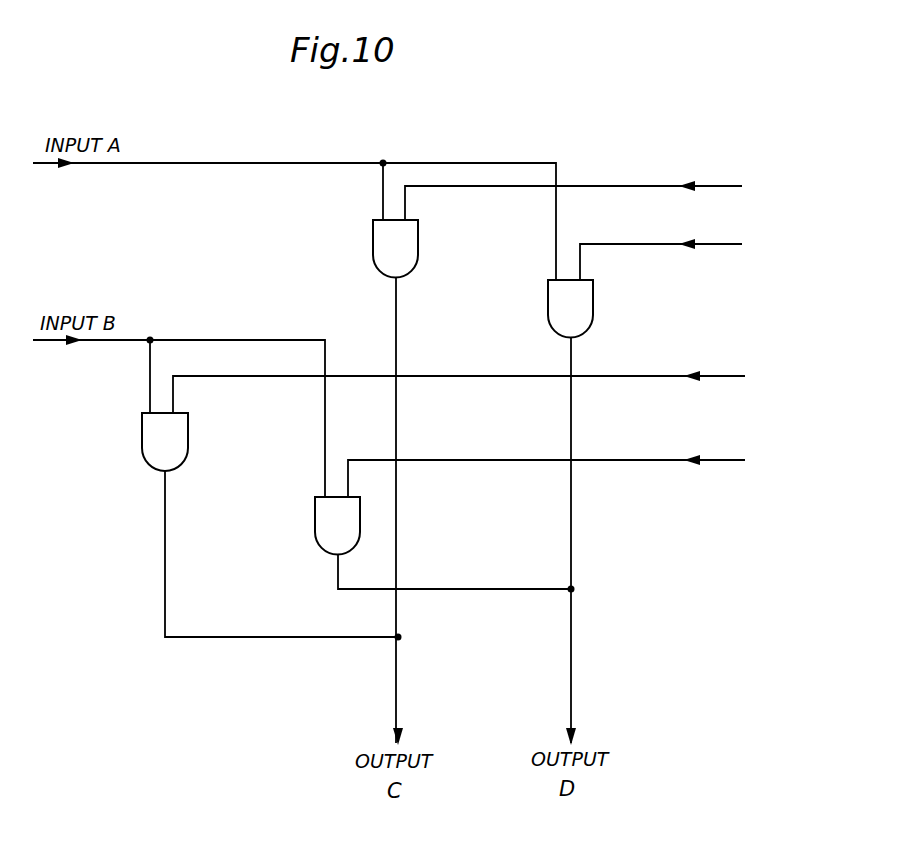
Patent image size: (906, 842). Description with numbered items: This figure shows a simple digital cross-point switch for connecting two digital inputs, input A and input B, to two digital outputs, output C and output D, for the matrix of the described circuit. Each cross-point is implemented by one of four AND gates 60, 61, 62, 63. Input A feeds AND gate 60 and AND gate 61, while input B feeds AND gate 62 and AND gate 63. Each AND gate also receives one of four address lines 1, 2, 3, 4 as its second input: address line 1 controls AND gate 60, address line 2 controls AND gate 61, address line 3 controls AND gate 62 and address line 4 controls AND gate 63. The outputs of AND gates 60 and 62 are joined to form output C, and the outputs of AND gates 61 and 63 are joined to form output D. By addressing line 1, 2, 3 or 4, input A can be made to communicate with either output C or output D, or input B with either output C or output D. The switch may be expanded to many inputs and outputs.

The address line 1 is at (593, 190).
The address line 2 is at (669, 257).
The address line 3 is at (469, 389).
The address line 4 is at (557, 473).
The AND gate 60 is at (418, 262).
The AND gate 61 is at (593, 320).
The AND gate 62 is at (149, 473).
The AND gate 63 is at (315, 551).